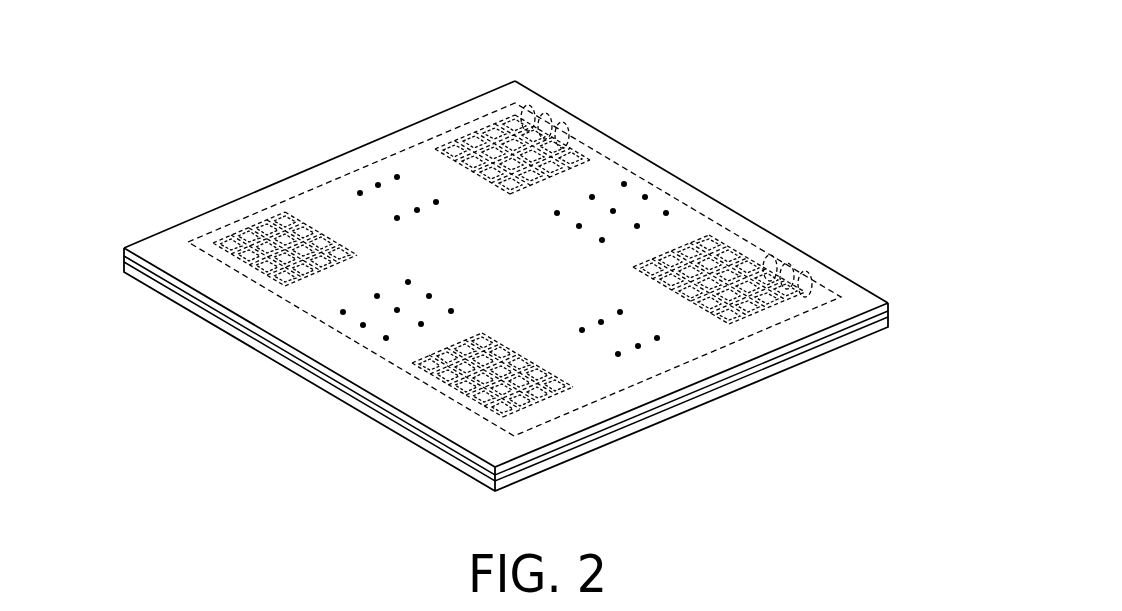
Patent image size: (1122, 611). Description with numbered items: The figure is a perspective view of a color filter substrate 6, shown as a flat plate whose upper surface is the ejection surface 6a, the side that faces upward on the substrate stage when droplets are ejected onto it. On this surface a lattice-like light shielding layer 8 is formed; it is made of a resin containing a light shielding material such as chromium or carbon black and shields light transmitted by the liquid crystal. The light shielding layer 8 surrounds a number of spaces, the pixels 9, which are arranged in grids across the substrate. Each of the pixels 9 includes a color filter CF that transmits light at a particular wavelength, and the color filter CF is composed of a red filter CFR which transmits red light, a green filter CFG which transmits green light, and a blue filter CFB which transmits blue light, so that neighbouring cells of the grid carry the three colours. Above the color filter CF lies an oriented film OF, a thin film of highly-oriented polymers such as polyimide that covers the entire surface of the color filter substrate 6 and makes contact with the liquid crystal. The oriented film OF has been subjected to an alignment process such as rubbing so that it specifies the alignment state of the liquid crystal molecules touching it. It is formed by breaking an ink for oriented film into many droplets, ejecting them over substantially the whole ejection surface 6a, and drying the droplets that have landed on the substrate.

The color filter substrate 6 is at (741, 94).
The ejection surface 6a is at (682, 186).
The light shielding layer 8 is at (366, 166).
The pixels 9 is at (278, 202).
The color filter CF is at (662, 103).
The red filter CFR is at (528, 105).
The green filter CFG is at (546, 113).
The blue filter CFB is at (564, 122).
The oriented film OF is at (672, 387).